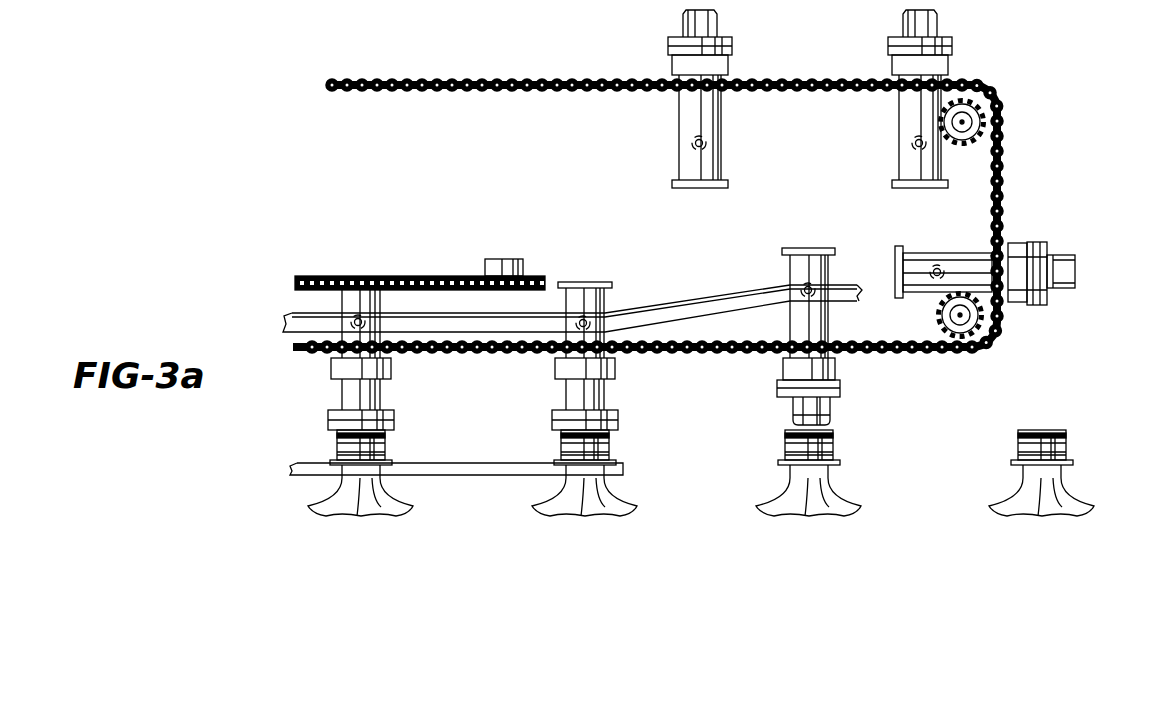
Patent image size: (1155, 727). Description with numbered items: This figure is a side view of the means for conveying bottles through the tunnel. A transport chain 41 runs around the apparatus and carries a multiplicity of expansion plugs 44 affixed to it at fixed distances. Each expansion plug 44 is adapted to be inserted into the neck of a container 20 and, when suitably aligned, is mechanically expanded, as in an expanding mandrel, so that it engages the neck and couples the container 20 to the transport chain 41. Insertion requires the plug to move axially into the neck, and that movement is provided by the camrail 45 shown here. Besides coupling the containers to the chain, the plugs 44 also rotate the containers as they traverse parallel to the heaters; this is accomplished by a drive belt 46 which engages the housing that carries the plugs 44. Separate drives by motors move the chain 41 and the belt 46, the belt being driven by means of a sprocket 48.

The container 20 is at (837, 498).
The transport chain 41 is at (470, 78).
The expansion plug 44 is at (1070, 258).
The camrail 45 is at (658, 308).
The drive belt 46 is at (962, 122).
The sprocket 48 is at (498, 259).